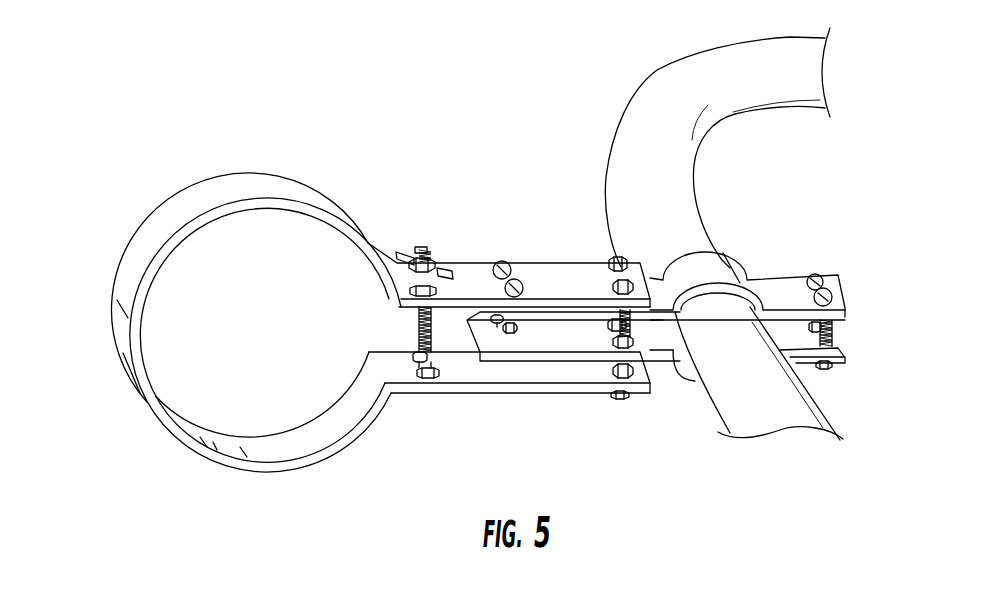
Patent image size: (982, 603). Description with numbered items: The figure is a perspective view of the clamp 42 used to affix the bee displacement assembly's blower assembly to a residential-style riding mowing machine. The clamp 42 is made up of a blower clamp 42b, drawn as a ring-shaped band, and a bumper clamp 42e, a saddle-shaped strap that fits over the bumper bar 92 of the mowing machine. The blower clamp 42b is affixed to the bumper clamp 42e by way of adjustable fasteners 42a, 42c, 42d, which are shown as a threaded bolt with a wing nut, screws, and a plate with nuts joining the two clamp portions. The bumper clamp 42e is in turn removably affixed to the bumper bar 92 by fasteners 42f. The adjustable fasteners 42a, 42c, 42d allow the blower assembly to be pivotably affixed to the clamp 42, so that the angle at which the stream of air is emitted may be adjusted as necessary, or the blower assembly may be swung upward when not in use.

The clamp 42 is at (132, 136).
The adjustable fastener 42a is at (435, 265).
The blower clamp 42b is at (125, 367).
The adjustable fastener 42c is at (507, 265).
The adjustable fastener 42d is at (632, 398).
The bumper clamp 42e is at (747, 278).
The fasteners 42f is at (835, 303).
The bumper bar 92 is at (667, 97).